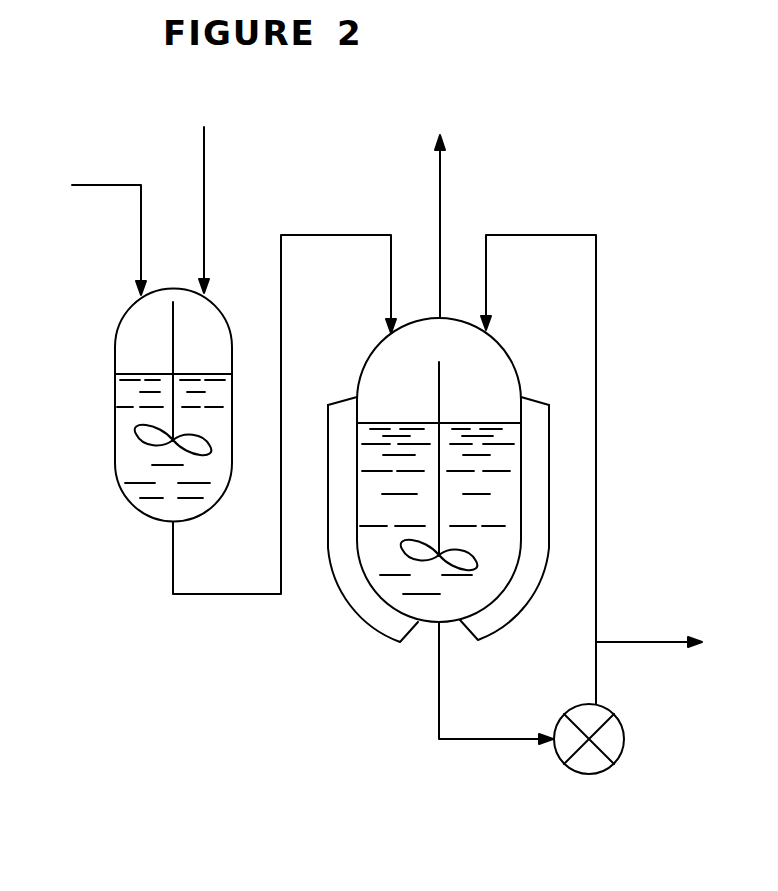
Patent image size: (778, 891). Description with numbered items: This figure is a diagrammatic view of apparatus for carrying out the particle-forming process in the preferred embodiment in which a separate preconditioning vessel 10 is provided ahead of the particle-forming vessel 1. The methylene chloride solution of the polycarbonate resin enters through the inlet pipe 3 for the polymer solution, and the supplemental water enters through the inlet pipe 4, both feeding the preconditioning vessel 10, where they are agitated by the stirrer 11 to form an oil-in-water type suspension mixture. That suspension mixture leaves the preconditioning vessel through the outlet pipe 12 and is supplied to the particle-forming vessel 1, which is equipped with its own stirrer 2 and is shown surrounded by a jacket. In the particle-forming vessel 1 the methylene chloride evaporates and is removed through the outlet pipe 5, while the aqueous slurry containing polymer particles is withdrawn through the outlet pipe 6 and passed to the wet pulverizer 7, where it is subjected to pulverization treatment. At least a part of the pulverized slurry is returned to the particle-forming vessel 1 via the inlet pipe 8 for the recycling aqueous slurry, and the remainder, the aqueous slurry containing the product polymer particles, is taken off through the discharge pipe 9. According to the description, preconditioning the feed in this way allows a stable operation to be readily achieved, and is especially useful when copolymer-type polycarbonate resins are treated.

The particle-forming vessel 1 is at (360, 577).
The stirrer 2 is at (408, 555).
The inlet pipe for the polymer solution 3 is at (141, 185).
The inlet pipe for the supplemental water 4 is at (204, 175).
The outlet pipe for the evaporated methylene chloride 5 is at (441, 228).
The outlet pipe for the aqueous slurry 6 is at (480, 739).
The wet pulverizer 7 is at (583, 763).
The inlet pipe for the recycling aqueous slurry 8 is at (528, 235).
The discharge pipe for the aqueous slurry containing product polymer particles 9 is at (625, 642).
The preconditioning vessel 10 is at (113, 380).
The stirrer 11 is at (143, 437).
The outlet pipe for the oil-in-water type suspension mixture 12 is at (225, 594).